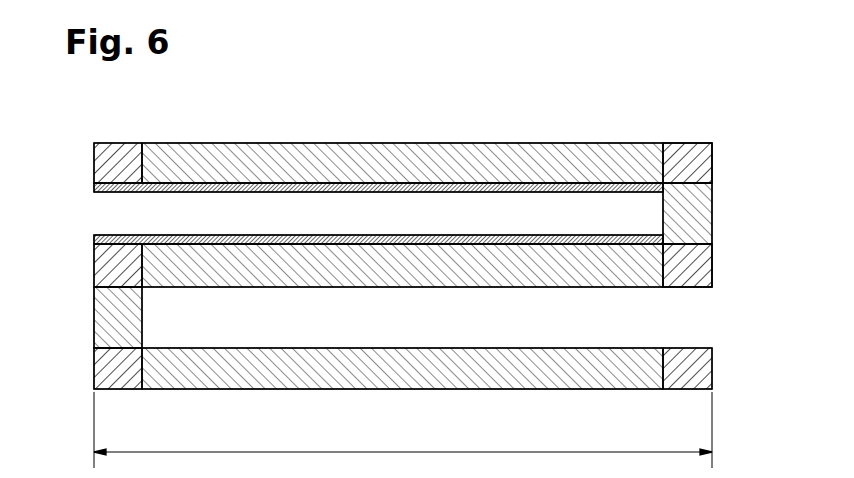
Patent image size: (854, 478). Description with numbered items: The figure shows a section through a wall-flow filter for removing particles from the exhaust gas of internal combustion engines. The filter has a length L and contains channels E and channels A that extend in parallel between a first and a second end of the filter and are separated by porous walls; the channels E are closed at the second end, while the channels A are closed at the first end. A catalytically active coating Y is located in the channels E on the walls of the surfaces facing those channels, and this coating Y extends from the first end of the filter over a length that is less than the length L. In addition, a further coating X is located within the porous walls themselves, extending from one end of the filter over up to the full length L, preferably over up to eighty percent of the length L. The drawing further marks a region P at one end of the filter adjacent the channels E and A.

The coating X is at (247, 171).
The catalytically active coating Y is at (94, 188).
The channels E is at (396, 223).
The channels A is at (396, 326).
The length L is at (403, 430).
The end plate portion P is at (621, 186).